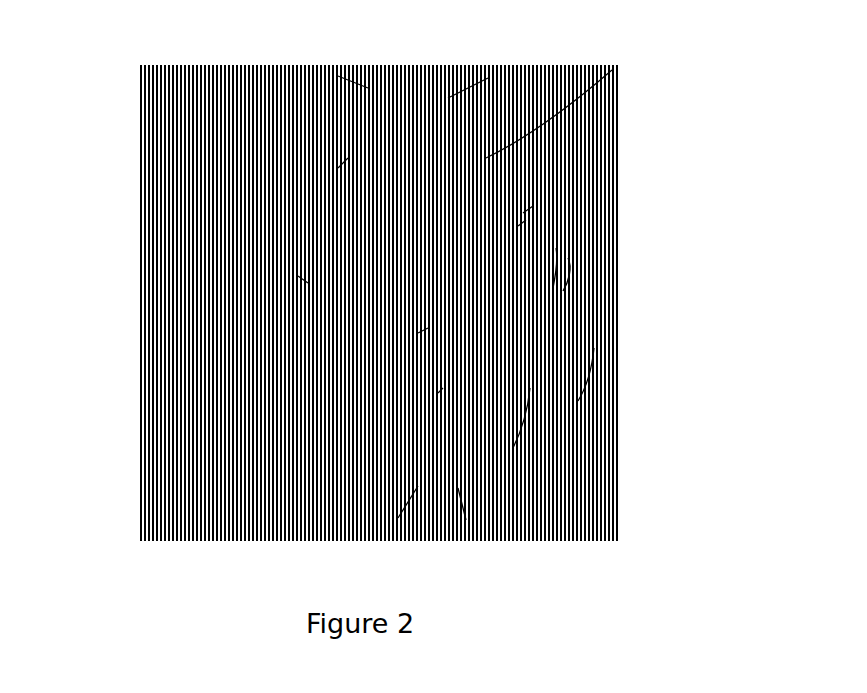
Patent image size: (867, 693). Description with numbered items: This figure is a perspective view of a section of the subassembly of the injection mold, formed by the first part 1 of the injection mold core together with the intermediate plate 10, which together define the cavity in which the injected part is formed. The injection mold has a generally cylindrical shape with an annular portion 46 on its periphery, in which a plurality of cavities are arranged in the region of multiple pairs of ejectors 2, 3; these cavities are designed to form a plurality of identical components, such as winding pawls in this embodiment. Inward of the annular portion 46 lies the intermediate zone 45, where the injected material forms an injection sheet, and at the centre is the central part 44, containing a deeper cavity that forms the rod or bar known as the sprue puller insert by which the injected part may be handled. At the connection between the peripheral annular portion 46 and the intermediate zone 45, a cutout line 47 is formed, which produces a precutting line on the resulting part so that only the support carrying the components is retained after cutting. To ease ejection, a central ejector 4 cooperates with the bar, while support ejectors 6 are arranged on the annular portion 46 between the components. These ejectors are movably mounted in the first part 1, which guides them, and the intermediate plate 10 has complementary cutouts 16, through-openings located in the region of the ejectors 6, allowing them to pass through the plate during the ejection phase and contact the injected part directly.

The first part 1 is at (330, 68).
The ejector 2 is at (604, 62).
The ejector 3 is at (340, 150).
The central ejector 4 is at (290, 268).
The support ejector 6 is at (525, 198).
The intermediate plate 10 is at (480, 70).
The complementary cutout 16 is at (518, 212).
The central part 44 is at (410, 325).
The intermediate zone 45 is at (430, 385).
The annular portion 46 is at (570, 393).
The cutout line 47 is at (505, 440).